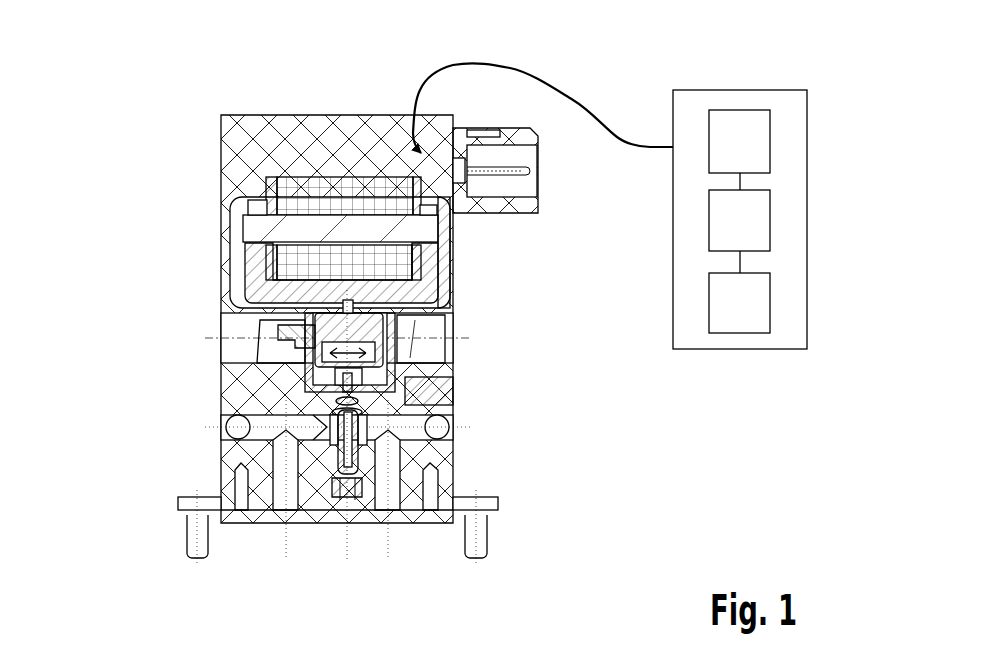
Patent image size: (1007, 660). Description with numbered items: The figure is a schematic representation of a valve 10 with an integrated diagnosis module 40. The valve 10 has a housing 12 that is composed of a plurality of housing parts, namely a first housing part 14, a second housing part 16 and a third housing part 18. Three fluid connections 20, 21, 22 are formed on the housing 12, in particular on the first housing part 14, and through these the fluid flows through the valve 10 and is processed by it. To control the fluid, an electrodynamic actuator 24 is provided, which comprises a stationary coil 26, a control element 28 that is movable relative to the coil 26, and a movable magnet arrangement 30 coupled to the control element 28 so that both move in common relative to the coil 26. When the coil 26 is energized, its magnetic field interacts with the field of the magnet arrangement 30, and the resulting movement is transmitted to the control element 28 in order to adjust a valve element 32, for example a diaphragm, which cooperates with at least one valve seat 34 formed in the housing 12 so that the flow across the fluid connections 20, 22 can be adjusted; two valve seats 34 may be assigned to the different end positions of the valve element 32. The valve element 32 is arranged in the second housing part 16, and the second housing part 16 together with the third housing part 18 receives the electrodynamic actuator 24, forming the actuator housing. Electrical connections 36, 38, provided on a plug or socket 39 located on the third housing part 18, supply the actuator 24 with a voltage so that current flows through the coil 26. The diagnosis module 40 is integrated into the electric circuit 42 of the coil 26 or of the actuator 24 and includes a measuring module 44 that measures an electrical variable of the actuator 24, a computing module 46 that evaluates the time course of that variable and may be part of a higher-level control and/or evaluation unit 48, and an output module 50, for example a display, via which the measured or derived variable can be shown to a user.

The valve 10 is at (104, 66).
The housing 12 is at (98, 214).
The first housing part 14 is at (225, 517).
The second housing part 16 is at (228, 400).
The third housing part 18 is at (221, 155).
The fluid connection 20 is at (282, 520).
The fluid connection 21 is at (335, 520).
The fluid connection 22 is at (390, 520).
The electrodynamic actuator 24 is at (472, 335).
The coil 26 is at (283, 190).
The control element 28 is at (369, 443).
The magnet arrangement 30 is at (320, 325).
The valve element 32 is at (358, 472).
The valve seat 34 is at (357, 420).
The electrical connection 36 is at (428, 153).
The electrical connection 38 is at (415, 175).
The plug or socket 39 is at (523, 212).
The diagnosis module 40 is at (690, 74).
The electric circuit 42 is at (403, 170).
The measuring module 44 is at (757, 148).
The computing module 46 is at (760, 236).
The control and/or evaluation unit 48 is at (806, 74).
The output module 50 is at (727, 318).